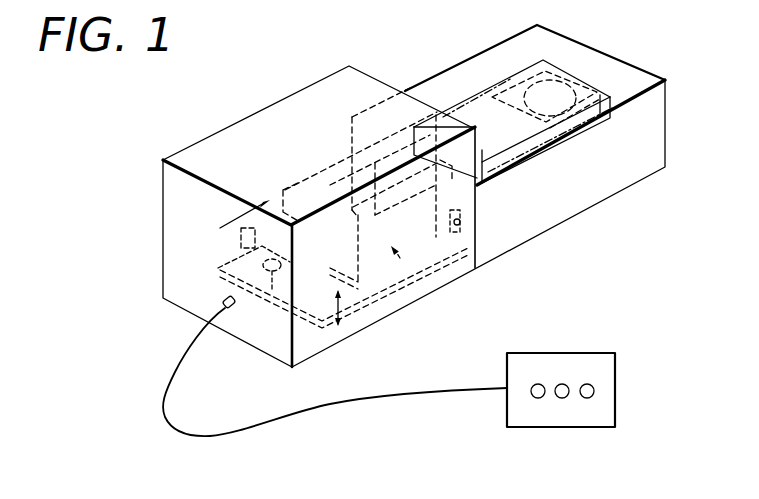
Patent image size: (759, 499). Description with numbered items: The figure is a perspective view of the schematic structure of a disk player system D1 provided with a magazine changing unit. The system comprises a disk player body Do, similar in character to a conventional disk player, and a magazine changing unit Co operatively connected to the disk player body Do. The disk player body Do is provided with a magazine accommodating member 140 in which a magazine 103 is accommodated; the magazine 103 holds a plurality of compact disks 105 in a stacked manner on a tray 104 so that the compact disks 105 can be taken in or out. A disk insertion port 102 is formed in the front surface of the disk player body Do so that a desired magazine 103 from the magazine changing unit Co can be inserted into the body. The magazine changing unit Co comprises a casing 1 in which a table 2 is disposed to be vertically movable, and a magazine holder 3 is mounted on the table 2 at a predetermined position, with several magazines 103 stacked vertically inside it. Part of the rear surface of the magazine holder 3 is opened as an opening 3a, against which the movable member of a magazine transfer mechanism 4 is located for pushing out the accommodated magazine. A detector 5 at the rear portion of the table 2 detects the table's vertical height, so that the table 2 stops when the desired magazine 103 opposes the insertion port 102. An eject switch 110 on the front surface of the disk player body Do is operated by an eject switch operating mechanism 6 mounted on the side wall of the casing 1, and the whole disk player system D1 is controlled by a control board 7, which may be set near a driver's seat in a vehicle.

The casing 1 is at (193, 158).
The table 2 is at (379, 285).
The magazine holder 3 is at (315, 170).
The opening 3a is at (287, 190).
The magazine transfer mechanism 4 is at (240, 236).
The detector 5 is at (270, 290).
The eject switch operating mechanism 6 is at (409, 285).
The control board 7 is at (614, 357).
The disk insertion port 102 is at (474, 208).
The magazine 103 is at (490, 106).
The tray 104 is at (592, 95).
The compact disks 105 is at (562, 82).
The eject switch 110 is at (476, 245).
The magazine accommodating member 140 is at (468, 100).
The magazine changing unit Co is at (446, 297).
The disk player body Do is at (616, 202).
The disk player system D1 is at (594, 258).